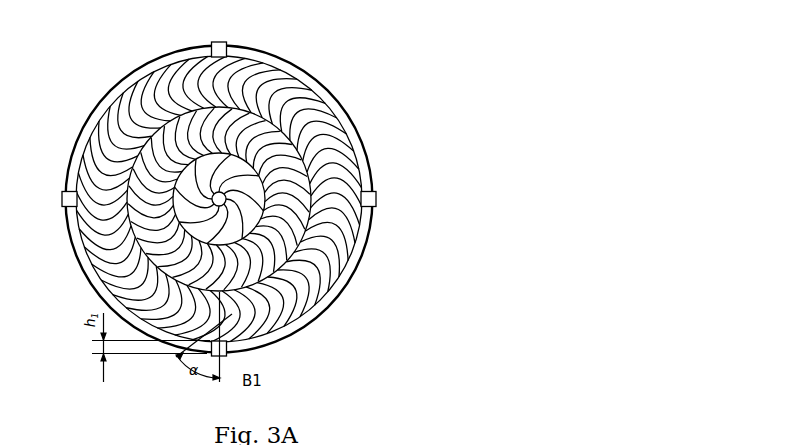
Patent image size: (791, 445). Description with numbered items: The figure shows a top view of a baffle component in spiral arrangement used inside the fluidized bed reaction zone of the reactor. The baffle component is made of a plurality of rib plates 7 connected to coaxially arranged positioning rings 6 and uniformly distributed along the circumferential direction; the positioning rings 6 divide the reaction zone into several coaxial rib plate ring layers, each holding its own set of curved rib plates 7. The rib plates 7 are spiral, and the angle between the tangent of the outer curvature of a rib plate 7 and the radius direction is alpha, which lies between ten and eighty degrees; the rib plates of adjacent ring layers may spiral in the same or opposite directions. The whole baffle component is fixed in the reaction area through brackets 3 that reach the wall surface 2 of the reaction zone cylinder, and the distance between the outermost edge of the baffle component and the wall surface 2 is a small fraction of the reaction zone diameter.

The wall surface 2 is at (367, 145).
The bracket 3 is at (375, 192).
The positioning ring 6 is at (322, 104).
The rib plate 7 is at (360, 258).